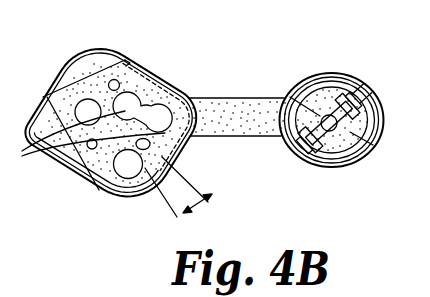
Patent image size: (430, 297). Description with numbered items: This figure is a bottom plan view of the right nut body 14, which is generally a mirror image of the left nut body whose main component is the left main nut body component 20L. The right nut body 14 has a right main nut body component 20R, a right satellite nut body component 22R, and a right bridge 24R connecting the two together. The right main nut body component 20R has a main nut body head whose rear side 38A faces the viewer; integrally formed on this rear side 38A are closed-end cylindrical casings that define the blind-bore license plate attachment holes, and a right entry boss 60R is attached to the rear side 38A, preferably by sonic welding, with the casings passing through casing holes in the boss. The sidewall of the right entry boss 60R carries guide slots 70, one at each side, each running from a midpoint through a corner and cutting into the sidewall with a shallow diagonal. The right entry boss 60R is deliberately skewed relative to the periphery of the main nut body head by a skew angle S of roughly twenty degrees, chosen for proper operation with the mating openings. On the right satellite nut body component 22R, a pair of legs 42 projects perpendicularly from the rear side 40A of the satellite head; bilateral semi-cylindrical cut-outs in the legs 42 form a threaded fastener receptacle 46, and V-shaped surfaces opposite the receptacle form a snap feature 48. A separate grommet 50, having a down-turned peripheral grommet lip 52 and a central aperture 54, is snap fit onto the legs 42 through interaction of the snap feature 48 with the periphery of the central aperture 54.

The right main nut body component 20R is at (156, 75).
The left main nut body component 20L is at (9, 38).
The guide slot 70 is at (134, 58).
The rear side of main nut body head 38A is at (78, 150).
The right entry boss 60R is at (78, 150).
The skew angle S is at (213, 218).
The right nut body 14 is at (199, 79).
The right bridge 24R is at (222, 98).
The right satellite nut body component 22R is at (300, 116).
The rear side of satellite nut body head 40A is at (307, 78).
The pair of legs 42 is at (366, 157).
The grommet 50 is at (347, 170).
The threaded fastener receptacle 46 is at (297, 101).
The snap feature 48 is at (337, 95).
The peripheral grommet lip 52 is at (290, 161).
The central aperture 54 is at (360, 43).